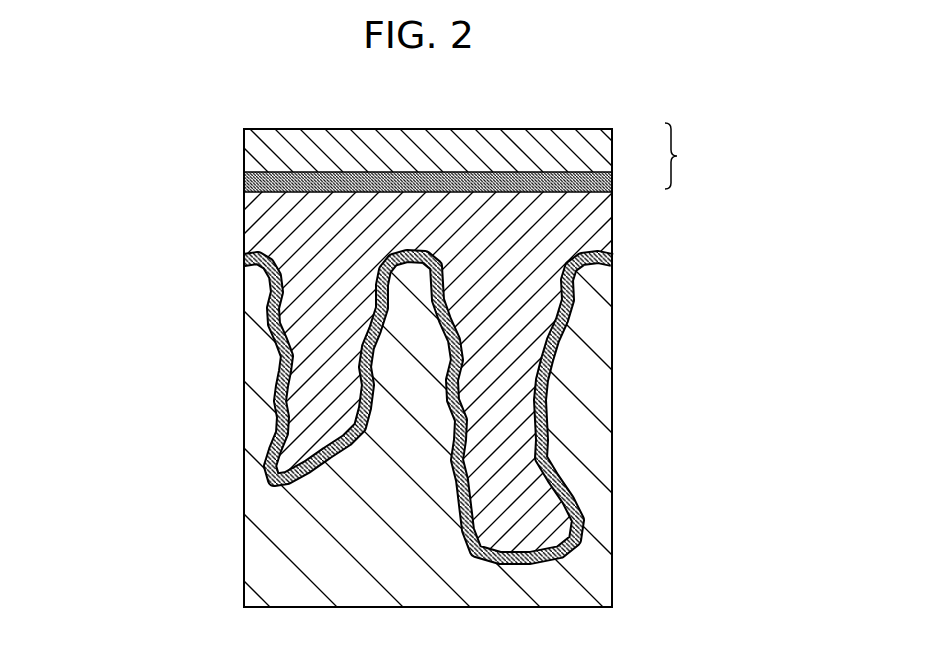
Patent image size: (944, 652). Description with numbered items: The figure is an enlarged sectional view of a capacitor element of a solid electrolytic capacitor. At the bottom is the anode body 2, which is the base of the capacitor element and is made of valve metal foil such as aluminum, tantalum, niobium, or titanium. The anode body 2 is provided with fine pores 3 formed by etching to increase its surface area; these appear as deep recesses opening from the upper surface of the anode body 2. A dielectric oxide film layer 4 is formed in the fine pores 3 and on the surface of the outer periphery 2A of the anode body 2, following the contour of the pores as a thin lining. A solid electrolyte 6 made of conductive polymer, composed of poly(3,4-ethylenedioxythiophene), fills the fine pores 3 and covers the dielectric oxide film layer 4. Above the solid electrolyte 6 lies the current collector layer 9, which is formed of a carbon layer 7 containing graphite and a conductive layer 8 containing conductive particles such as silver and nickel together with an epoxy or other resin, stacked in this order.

The anode body 2 is at (283, 519).
The outer periphery 2A is at (385, 262).
The fine pores 3 is at (302, 332).
The dielectric oxide film layer 4 is at (585, 518).
The solid electrolyte 6 is at (595, 237).
The carbon layer 7 is at (612, 180).
The conductive layer 8 is at (595, 143).
The current collector layer 9 is at (683, 156).